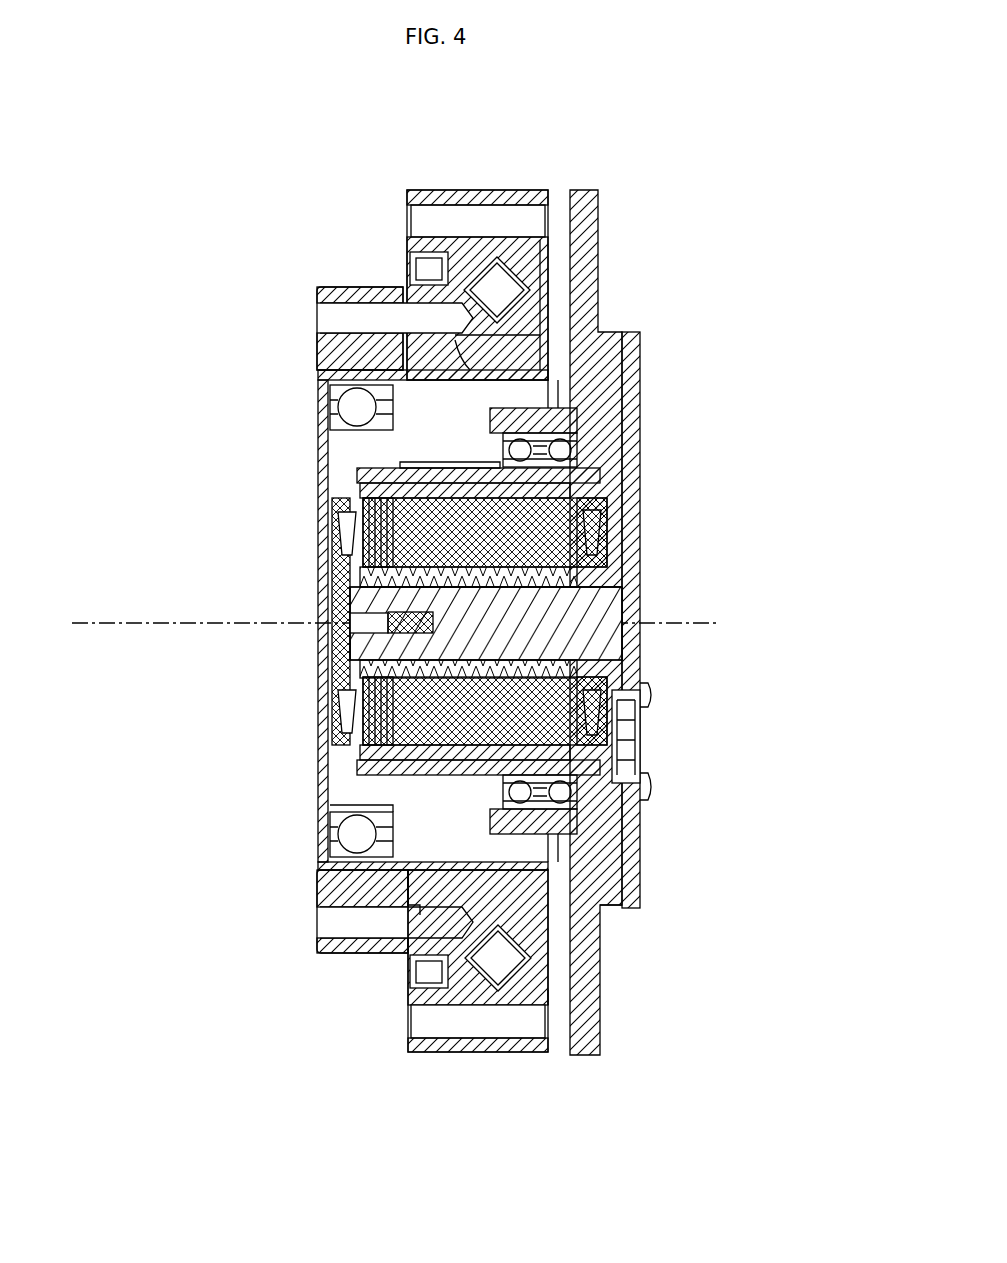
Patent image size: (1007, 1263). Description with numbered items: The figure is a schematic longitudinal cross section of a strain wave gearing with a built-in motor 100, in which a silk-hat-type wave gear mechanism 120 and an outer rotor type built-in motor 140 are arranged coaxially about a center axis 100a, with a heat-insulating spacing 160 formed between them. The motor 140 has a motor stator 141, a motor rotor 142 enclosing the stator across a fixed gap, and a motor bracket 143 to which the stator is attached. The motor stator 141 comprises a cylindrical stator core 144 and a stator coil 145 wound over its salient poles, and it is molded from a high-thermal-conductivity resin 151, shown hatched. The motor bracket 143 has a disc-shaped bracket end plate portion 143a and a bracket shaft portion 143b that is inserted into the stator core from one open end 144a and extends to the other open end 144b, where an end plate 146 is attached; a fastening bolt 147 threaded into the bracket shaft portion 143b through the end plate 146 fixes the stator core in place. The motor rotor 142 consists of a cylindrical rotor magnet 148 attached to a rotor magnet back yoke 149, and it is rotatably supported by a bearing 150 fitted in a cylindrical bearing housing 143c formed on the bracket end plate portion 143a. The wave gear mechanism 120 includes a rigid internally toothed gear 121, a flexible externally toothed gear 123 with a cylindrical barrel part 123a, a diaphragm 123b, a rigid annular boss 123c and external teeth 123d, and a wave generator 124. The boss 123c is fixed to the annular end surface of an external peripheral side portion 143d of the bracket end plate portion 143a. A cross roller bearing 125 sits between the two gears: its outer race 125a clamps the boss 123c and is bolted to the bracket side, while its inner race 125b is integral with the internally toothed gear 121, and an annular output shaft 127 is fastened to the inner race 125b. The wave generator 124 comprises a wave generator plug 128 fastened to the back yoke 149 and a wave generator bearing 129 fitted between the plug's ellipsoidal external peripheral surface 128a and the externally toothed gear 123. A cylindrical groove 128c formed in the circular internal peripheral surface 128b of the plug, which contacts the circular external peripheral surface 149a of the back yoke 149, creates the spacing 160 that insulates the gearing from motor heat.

The strain wave gearing with a built-in motor 100 is at (243, 241).
The center axis 100a is at (96, 614).
The wave gear mechanism 120 is at (281, 392).
The rigid internally toothed gear 121 is at (331, 876).
The flexible externally toothed gear 123 is at (428, 849).
The cylindrical barrel part 123a is at (413, 908).
The diaphragm 123b is at (500, 920).
The rigid annular boss 123c is at (548, 997).
The external teeth 123d is at (373, 866).
The wave generator 124 is at (325, 790).
The cross roller bearing 125 is at (757, 192).
The outer race 125a is at (517, 253).
The inner race 125b is at (527, 315).
The annular output shaft 127 is at (315, 356).
The wave generator plug 128 is at (330, 776).
The ellipsoidal external peripheral surface 128a is at (335, 812).
The circular internal peripheral surface 128b is at (358, 487).
The cylindrical groove 128c is at (453, 468).
The wave generator bearing 129 is at (345, 838).
The built-in motor 140 is at (288, 579).
The motor stator 141 is at (742, 550).
The motor rotor 142 is at (752, 437).
The motor bracket 143 is at (772, 700).
The bracket end plate portion 143a is at (636, 792).
The bracket shaft portion 143b is at (632, 668).
The cylindrical bearing housing 143c is at (628, 733).
The external peripheral side portion 143d is at (603, 862).
The stator core 144 is at (590, 568).
The open end 144a is at (510, 632).
The open end 144b is at (325, 655).
The stator coil 145 is at (600, 525).
The end plate 146 is at (330, 598).
The fastening bolt 147 is at (326, 611).
The rotor magnet 148 is at (590, 478).
The rotor magnet back yoke 149 is at (585, 446).
The circular external peripheral surface 149a is at (350, 458).
The bearing 150 is at (563, 413).
The high-thermal-conductivity resin 151 is at (345, 535).
The heat-insulating spacing 160 is at (325, 554).